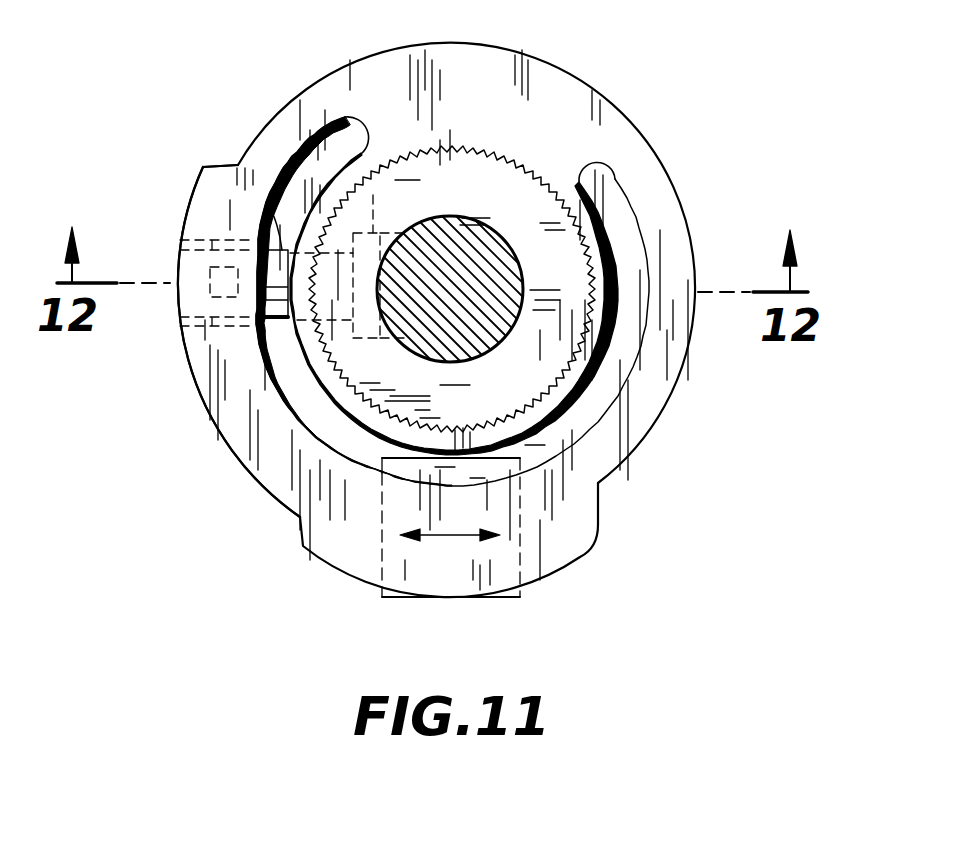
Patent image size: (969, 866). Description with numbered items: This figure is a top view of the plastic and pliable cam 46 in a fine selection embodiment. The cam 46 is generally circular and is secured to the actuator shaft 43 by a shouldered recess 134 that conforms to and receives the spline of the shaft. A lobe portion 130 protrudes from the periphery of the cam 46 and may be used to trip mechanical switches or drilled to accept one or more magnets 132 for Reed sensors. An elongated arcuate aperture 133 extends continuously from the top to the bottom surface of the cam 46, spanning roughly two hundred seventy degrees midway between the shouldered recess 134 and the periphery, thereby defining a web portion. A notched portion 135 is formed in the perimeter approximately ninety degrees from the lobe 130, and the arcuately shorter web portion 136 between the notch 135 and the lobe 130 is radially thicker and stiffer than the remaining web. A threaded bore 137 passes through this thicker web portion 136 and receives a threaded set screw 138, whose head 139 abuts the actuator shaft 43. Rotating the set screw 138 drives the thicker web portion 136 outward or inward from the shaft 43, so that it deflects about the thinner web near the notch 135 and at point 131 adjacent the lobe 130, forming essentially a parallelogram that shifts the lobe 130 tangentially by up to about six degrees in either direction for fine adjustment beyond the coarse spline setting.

The cam 46 is at (632, 101).
The actuator shaft 43 is at (505, 233).
The lobe portion 130 is at (573, 570).
The point adjacent lobe 131 is at (604, 486).
The magnet 132 is at (460, 598).
The elongated arcuate aperture 133 is at (602, 397).
The shouldered recess 134 is at (483, 168).
The notched portion 135 is at (220, 163).
The thicker web portion 136 is at (227, 407).
The threaded bore 137 is at (178, 258).
The set screw 138 is at (270, 212).
The head 139 is at (379, 197).